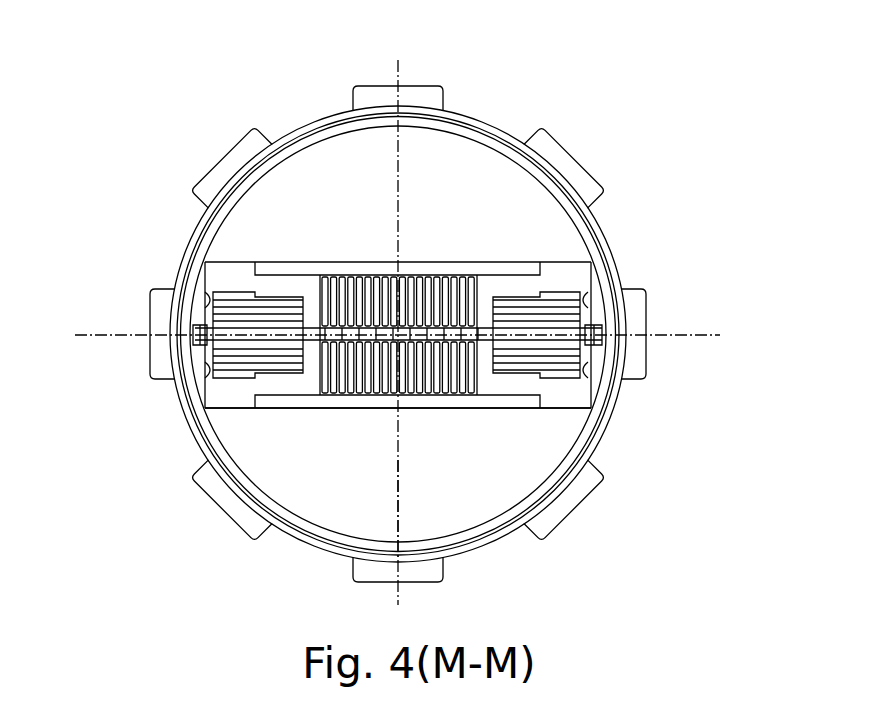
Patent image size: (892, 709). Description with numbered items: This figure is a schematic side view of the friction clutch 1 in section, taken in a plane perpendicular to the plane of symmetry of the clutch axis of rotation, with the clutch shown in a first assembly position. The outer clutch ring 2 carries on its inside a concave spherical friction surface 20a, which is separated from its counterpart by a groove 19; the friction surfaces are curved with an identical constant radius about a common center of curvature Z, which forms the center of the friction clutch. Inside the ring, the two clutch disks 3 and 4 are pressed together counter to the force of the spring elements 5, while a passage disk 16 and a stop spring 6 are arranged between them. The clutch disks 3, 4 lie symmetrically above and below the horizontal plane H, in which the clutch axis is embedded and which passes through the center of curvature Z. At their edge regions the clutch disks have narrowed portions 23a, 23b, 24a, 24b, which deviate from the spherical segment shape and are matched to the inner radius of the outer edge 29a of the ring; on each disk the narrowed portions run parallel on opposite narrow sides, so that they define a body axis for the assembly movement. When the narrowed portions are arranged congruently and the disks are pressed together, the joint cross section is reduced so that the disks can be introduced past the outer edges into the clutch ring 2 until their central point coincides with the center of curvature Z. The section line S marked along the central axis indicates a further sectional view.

The friction clutch 1 is at (165, 113).
The clutch ring 2 is at (493, 120).
The clutch disk 3 is at (562, 258).
The clutch disk 4 is at (228, 413).
The spring element 5 is at (235, 315).
The stop spring 6 is at (200, 346).
The passage disk 16 is at (250, 335).
The groove 19 is at (312, 121).
The friction surface 20a is at (343, 130).
The outer edge 29a is at (282, 167).
The narrowed portion 23a is at (588, 292).
The narrowed portion 23b is at (205, 290).
The narrowed portion 24a is at (590, 376).
The narrowed portion 24b is at (205, 388).
The center of curvature Z is at (400, 318).
The section axis S is at (398, 515).
The horizontal plane H is at (697, 333).